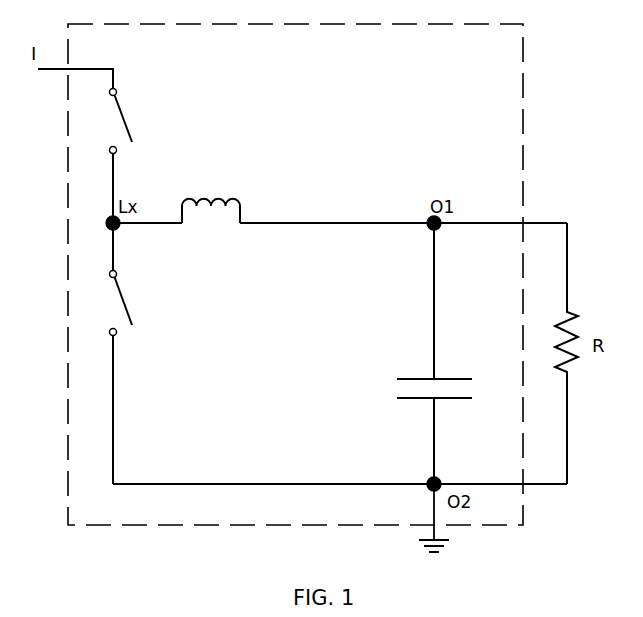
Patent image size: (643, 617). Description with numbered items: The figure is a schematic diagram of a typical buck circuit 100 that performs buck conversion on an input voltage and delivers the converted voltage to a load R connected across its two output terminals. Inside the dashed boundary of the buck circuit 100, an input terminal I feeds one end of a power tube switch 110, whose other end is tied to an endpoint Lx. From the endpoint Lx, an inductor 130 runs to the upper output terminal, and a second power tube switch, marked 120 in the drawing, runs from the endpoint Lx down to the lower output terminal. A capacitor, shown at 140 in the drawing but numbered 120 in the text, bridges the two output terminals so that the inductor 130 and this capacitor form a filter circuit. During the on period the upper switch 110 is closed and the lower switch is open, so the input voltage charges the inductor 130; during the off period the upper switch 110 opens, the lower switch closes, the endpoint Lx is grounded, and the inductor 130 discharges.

The buck circuit 100 is at (295, 274).
The power tube switch 110 is at (133, 113).
The capacitor 120 is at (133, 298).
The inductor 130 is at (213, 190).
The capacitor 140 is at (478, 355).